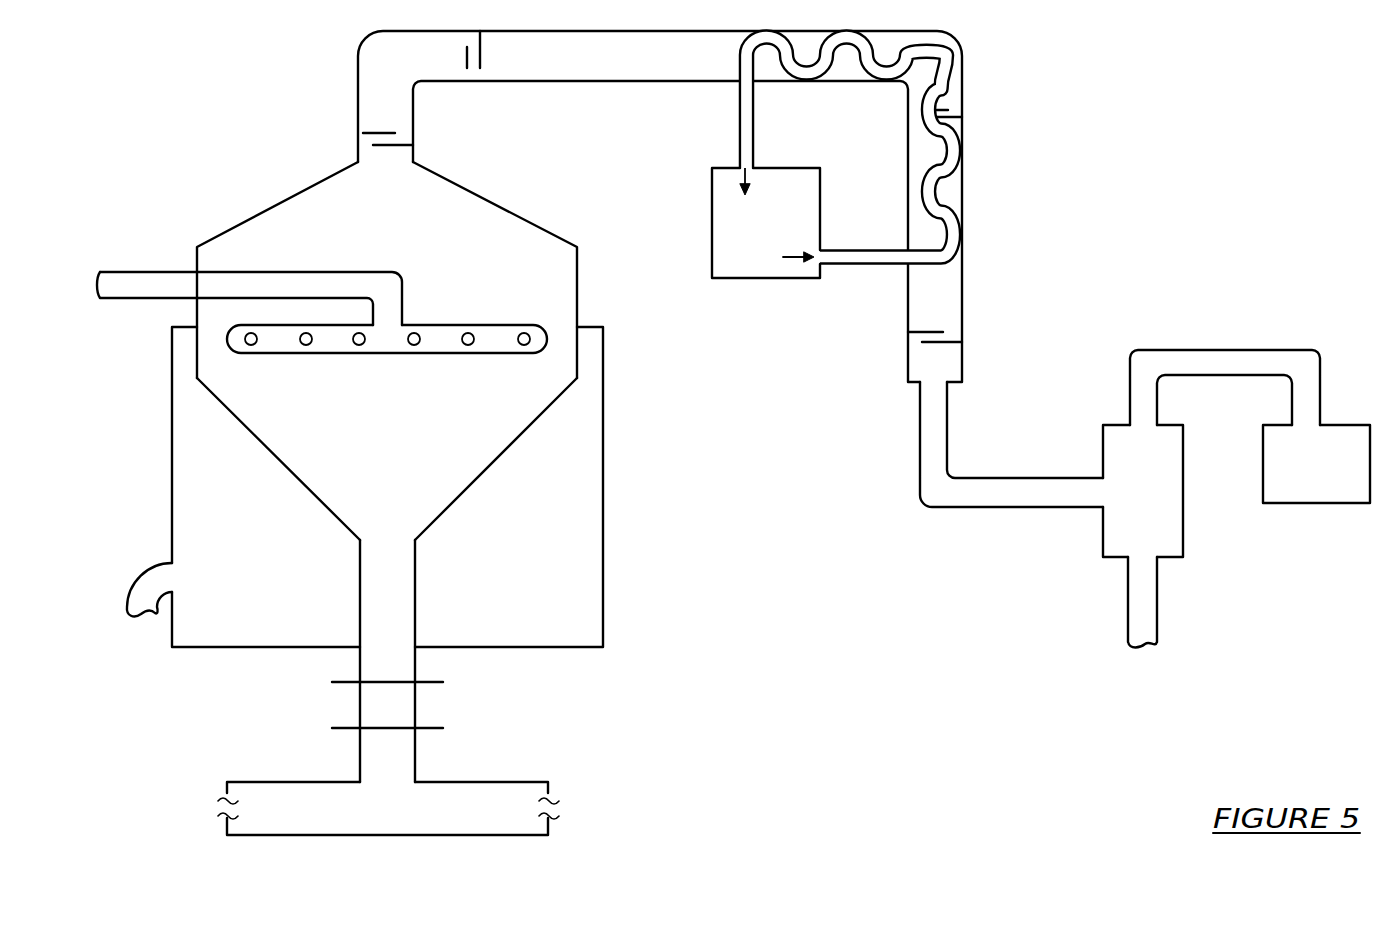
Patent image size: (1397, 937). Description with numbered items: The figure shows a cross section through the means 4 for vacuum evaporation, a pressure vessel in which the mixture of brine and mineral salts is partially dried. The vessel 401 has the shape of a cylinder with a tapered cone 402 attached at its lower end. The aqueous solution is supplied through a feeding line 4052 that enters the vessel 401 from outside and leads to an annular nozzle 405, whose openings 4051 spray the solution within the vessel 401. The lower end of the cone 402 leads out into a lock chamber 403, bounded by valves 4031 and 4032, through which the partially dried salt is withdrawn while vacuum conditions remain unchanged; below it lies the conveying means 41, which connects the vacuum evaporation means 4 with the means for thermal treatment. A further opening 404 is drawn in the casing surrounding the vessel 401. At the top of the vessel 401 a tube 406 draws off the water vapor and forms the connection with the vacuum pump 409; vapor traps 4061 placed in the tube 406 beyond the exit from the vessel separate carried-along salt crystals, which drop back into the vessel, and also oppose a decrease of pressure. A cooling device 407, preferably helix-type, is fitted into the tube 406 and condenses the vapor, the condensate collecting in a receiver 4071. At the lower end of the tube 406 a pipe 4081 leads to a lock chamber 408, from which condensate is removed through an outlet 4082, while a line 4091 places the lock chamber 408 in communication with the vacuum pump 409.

The means for vacuum evaporation 4 is at (262, 192).
The vessel 401 is at (387, 270).
The tapered cone 402 is at (387, 459).
The lock chamber 403 is at (387, 661).
The upper neck valve 4031 is at (420, 682).
The lower neck valve 4032 is at (420, 728).
The outlet 404 is at (176, 577).
The annular nozzle 405 is at (448, 355).
The perforations 4051 is at (473, 330).
The feeding line 4052 is at (249, 283).
The tube 406 is at (357, 78).
The vapor trap 4061 is at (476, 73).
The cooling device 407 is at (808, 70).
The condensate collector 4071 is at (766, 218).
The lock chamber 408 is at (1143, 491).
The suction pipe 4081 is at (1011, 444).
The discharge pipe 4082 is at (1108, 613).
The vacuum pump 409 is at (1316, 464).
The connecting pipe 4091 is at (1225, 371).
The conveying means 41 is at (388, 808).